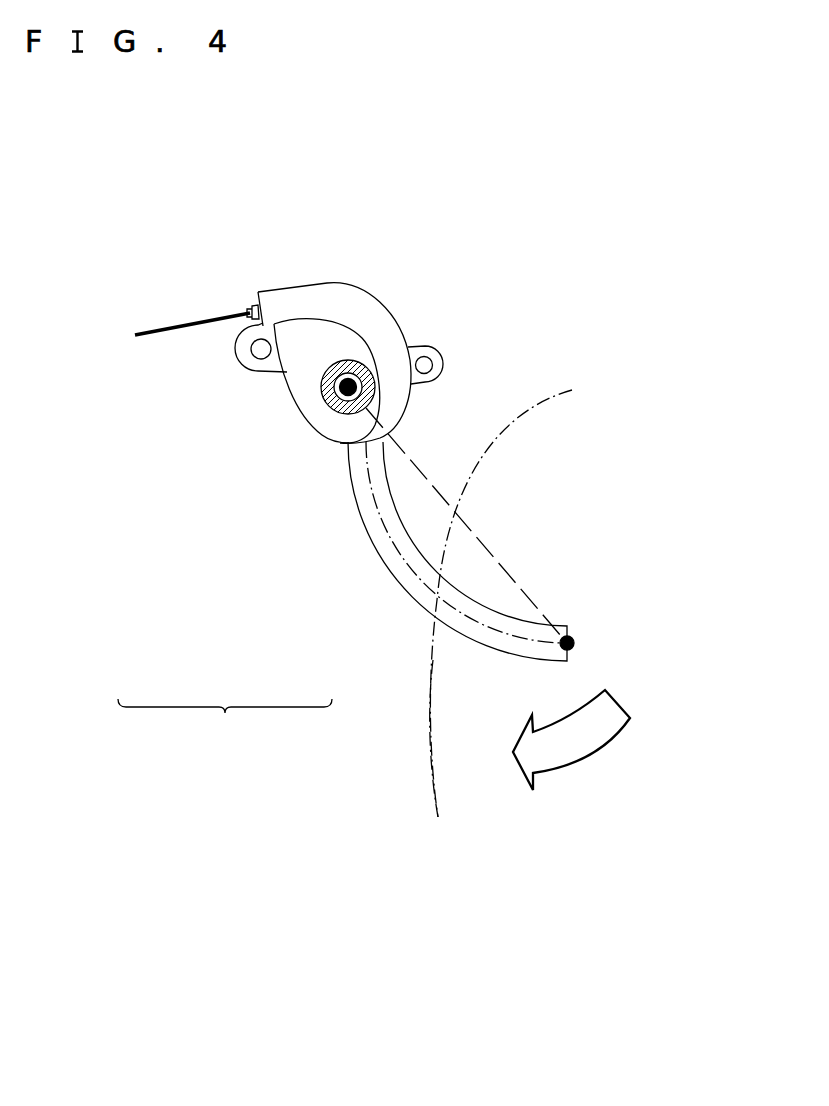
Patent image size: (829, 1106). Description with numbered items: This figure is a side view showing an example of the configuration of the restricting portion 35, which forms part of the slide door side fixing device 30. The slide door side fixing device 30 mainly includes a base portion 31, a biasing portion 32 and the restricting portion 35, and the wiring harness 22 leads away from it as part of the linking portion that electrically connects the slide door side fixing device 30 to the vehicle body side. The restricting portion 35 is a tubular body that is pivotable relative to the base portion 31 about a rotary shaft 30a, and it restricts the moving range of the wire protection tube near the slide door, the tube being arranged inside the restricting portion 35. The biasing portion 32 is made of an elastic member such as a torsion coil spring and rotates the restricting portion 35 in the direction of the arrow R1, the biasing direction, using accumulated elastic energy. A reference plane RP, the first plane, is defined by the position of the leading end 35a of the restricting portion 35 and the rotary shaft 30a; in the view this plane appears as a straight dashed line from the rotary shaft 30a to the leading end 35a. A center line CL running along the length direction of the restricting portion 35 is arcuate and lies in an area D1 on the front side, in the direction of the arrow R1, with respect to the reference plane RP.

The wiring harness 22 is at (192, 320).
The slide door side fixing device 30 is at (225, 724).
The rotary shaft 30a is at (337, 411).
The base portion 31 is at (303, 425).
The biasing portion 32 is at (348, 414).
The restricting portion 35 is at (399, 590).
The leading end 35a is at (575, 640).
The reference plane RP is at (519, 594).
The area D1 is at (470, 578).
The center line CL is at (440, 759).
The arrow (biasing direction) R1 is at (577, 730).